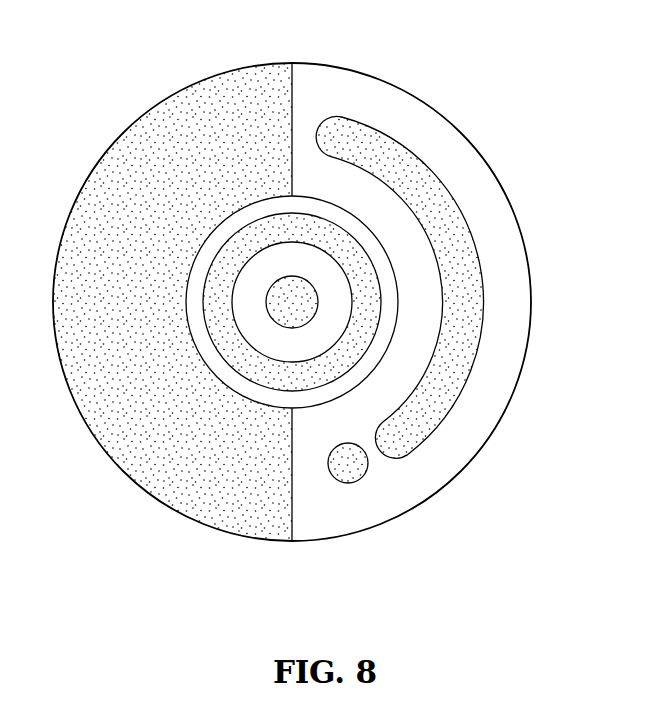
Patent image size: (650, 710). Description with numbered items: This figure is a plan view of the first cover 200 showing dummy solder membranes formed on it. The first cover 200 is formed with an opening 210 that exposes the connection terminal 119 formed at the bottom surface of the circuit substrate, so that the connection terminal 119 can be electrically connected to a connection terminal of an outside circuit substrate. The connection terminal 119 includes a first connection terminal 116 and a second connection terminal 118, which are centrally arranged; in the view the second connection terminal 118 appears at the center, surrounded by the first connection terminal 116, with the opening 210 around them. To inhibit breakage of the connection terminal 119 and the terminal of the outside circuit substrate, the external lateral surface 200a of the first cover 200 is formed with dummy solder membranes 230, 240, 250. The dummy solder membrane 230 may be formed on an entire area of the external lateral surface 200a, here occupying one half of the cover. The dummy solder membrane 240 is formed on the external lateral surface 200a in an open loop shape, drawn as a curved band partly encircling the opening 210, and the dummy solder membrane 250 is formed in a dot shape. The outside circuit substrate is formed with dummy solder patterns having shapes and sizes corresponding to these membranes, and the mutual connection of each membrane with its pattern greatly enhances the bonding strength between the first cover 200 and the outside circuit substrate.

The first cover 200 is at (237, 535).
The external lateral surface 200a is at (403, 485).
The opening 210 is at (378, 341).
The dummy solder membrane 230 is at (133, 157).
The dummy solder membrane 240 is at (350, 132).
The dummy solder membrane 250 is at (350, 478).
The first connection terminal 116 is at (373, 293).
The second connection terminal 118 is at (308, 293).
The connection terminal 119 is at (550, 165).